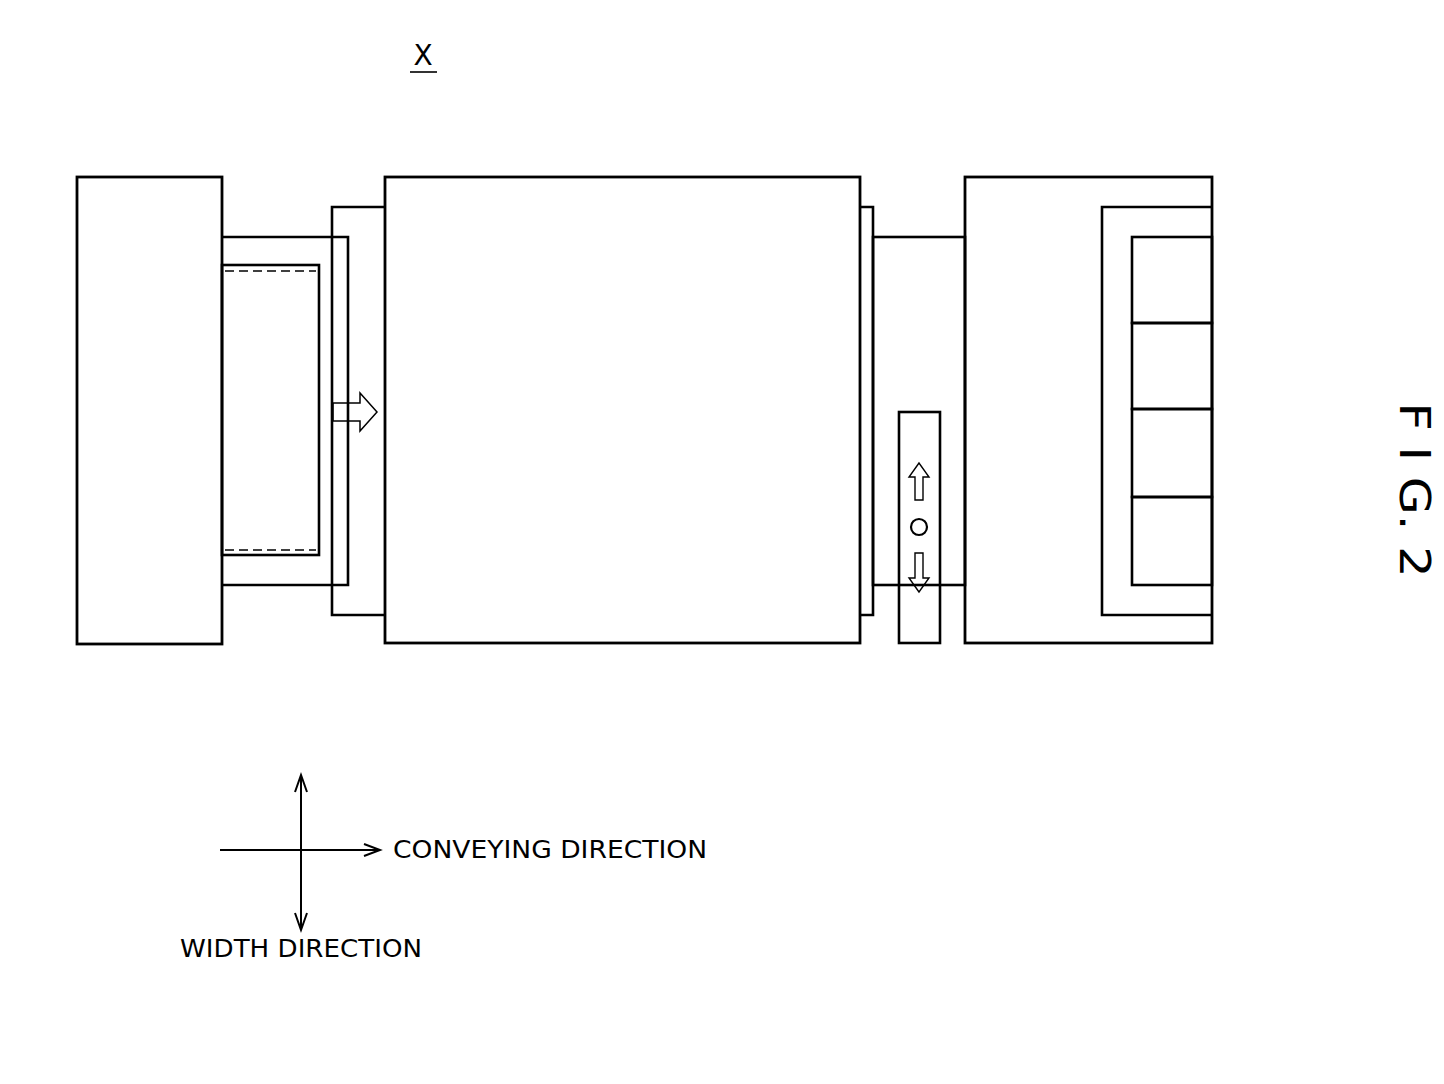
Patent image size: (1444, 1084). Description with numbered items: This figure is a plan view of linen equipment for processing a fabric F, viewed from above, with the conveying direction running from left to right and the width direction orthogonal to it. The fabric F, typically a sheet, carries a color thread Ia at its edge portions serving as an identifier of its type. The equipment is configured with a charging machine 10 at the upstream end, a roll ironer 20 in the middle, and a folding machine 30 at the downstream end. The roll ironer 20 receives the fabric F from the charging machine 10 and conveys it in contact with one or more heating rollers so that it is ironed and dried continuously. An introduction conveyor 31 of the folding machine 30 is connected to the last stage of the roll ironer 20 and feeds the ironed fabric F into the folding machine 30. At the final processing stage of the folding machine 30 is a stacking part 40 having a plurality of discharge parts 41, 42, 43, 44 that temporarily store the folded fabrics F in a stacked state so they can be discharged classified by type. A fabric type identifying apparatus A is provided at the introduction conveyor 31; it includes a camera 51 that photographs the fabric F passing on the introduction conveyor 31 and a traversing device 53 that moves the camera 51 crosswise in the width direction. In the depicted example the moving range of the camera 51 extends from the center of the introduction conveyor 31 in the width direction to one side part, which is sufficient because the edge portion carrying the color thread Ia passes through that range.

The charging machine 10 is at (137, 644).
The roll ironer 20 is at (630, 643).
The folding machine 30 is at (1057, 643).
The introduction conveyor 31 is at (933, 237).
The stacking part 40 is at (1148, 615).
The discharge part 41 is at (1153, 293).
The discharge part 42 is at (1153, 380).
The discharge part 43 is at (1153, 467).
The discharge part 44 is at (1153, 555).
The camera 51 is at (927, 527).
The traversing device 53 is at (909, 643).
The fabric type identifying apparatus A is at (912, 390).
The fabric F is at (255, 428).
The color thread Ia is at (278, 270).